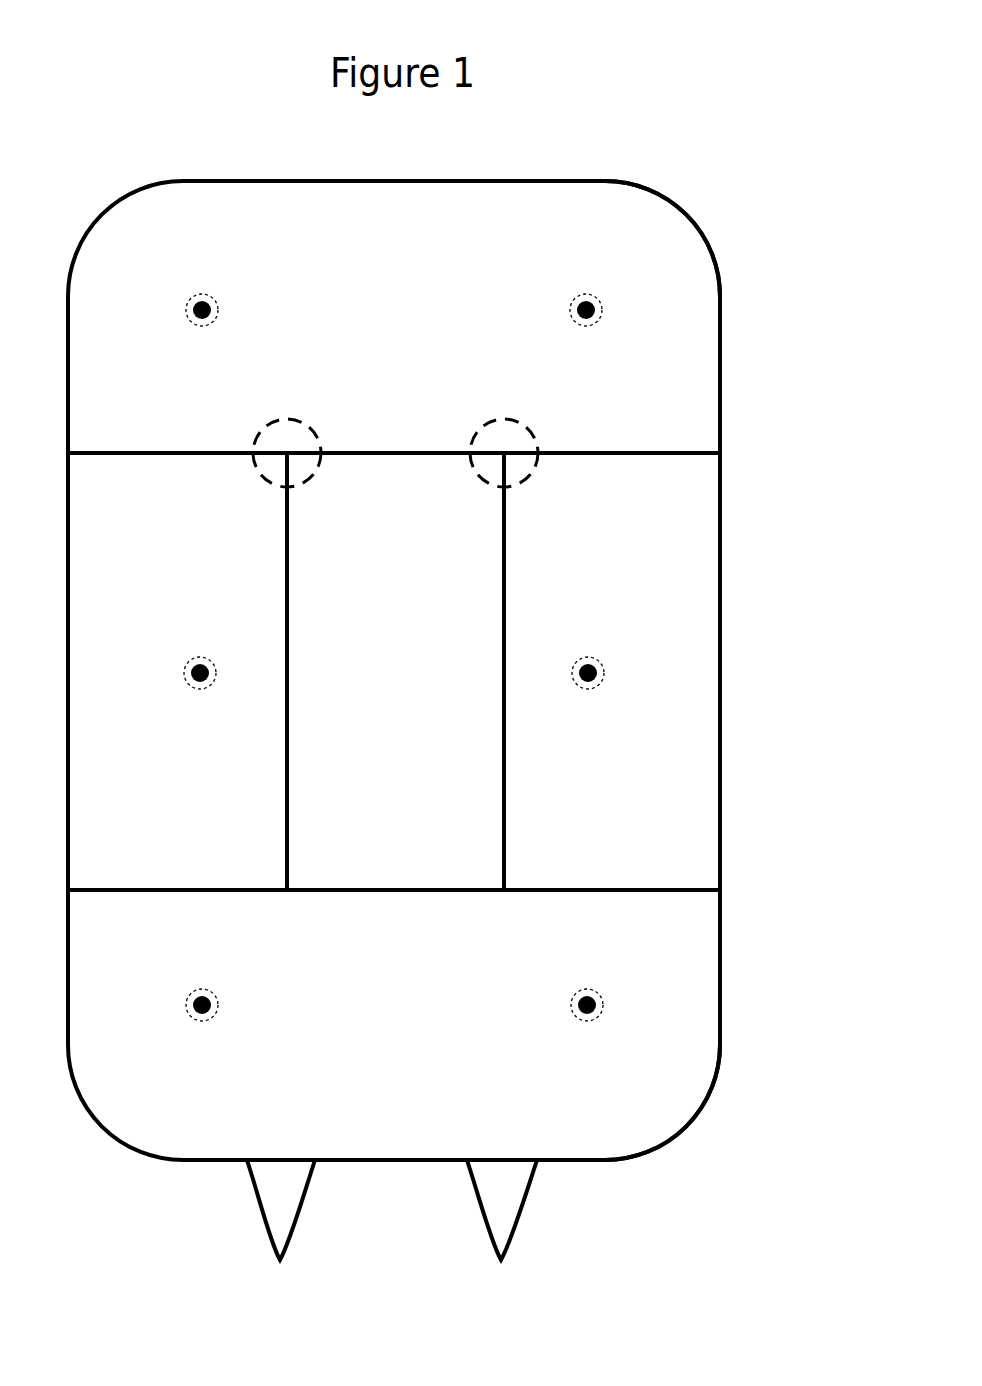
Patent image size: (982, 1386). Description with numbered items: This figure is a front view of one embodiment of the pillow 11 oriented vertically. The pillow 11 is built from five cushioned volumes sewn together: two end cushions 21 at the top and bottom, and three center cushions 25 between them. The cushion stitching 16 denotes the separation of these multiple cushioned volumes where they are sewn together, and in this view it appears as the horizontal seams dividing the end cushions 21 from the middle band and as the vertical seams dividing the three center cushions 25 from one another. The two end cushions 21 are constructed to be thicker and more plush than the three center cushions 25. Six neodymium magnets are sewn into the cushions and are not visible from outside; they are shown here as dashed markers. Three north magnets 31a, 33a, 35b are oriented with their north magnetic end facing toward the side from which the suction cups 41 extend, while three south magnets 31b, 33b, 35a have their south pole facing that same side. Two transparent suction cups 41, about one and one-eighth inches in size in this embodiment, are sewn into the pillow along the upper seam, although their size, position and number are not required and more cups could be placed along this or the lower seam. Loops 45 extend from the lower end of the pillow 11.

The pillow 11 is at (394, 640).
The end cushions 21 is at (655, 243).
The cushion stitching 16 is at (298, 657).
The center cushions 25 is at (543, 602).
The suction cups 41 is at (487, 420).
The north magnet 31a is at (213, 307).
The south magnet 31b is at (576, 307).
The north magnet 33a is at (210, 678).
The south magnet 33b is at (575, 676).
The south magnet 35a is at (212, 1008).
The north magnet 35b is at (577, 1010).
The loops 45 is at (470, 1232).